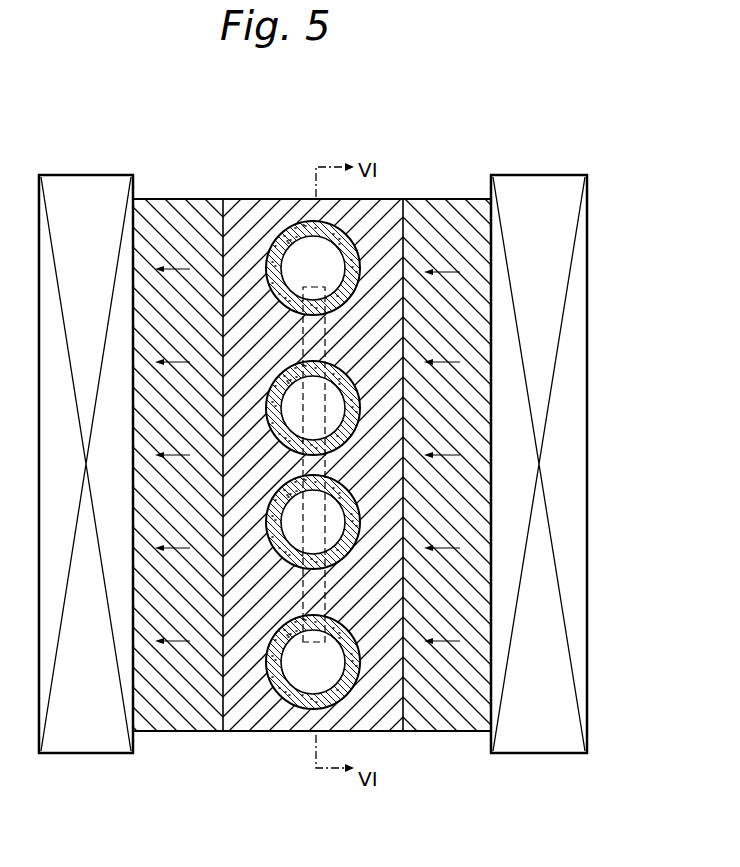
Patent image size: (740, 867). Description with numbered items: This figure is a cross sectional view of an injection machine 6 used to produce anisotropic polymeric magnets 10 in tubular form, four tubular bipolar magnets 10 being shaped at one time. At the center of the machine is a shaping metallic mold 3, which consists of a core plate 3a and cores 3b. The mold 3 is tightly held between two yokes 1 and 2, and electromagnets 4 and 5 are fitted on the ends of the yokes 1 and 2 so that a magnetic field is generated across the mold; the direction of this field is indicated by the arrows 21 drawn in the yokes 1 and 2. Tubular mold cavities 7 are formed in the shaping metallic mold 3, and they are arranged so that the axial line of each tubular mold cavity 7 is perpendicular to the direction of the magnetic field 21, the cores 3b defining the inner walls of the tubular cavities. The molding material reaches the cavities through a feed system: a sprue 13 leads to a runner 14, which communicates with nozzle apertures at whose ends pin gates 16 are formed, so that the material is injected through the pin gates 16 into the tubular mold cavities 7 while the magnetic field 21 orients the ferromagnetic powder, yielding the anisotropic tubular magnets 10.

The yoke 1 is at (176, 721).
The yoke 2 is at (452, 731).
The shaping metallic mold 3 is at (301, 480).
The core plate 3a is at (232, 731).
The cores 3b is at (333, 684).
The electromagnet 4 is at (85, 753).
The electromagnet 5 is at (540, 755).
The injection machine 6 is at (468, 185).
The tubular mold cavities 7 is at (293, 703).
The anisotropic polymeric magnet 10 is at (316, 251).
The sprue 13 is at (331, 466).
The runner 14 is at (318, 413).
The pin gates 16 is at (325, 304).
The magnetic field arrows 21 is at (461, 272).